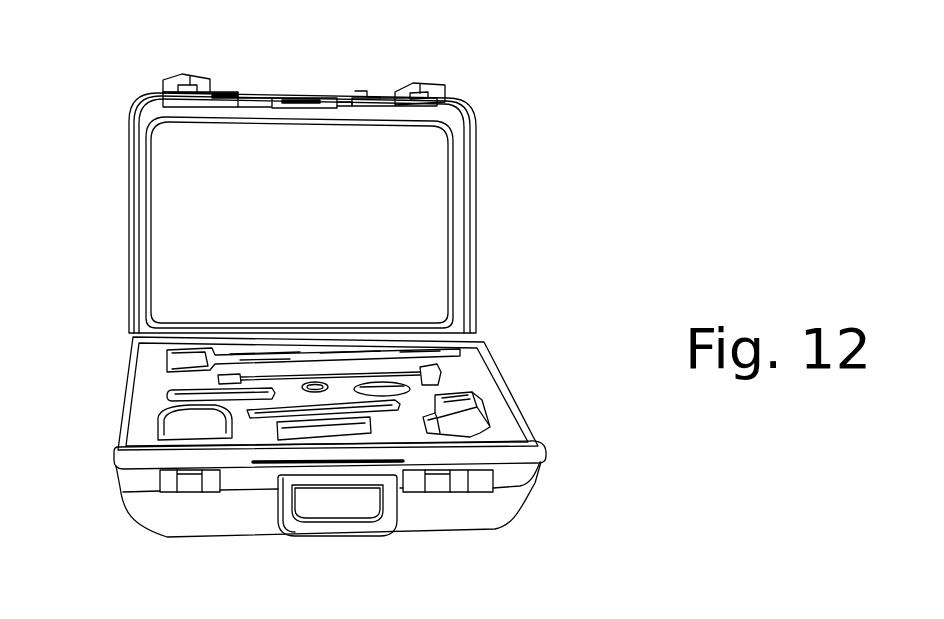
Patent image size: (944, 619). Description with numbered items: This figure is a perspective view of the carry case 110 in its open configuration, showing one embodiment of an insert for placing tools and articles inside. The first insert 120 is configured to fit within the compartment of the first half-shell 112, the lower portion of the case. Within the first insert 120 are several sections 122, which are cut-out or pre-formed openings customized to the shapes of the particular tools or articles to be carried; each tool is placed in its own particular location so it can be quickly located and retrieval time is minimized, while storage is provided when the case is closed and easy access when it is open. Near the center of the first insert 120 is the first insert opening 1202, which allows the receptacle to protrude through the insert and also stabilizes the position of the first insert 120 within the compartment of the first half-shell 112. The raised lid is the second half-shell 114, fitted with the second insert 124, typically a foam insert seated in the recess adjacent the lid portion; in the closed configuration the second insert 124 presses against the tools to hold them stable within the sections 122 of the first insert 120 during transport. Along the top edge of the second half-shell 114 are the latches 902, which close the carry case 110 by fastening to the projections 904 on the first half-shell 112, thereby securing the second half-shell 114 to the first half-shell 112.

The carry case 110 is at (527, 101).
The first half-shell 112 is at (520, 512).
The second half-shell 114 is at (478, 240).
The first insert 120 is at (477, 373).
The sections 122 is at (175, 427).
The second insert 124 is at (165, 214).
The latches 902 is at (212, 77).
The projections 904 is at (178, 495).
The first insert opening 1202 is at (309, 393).